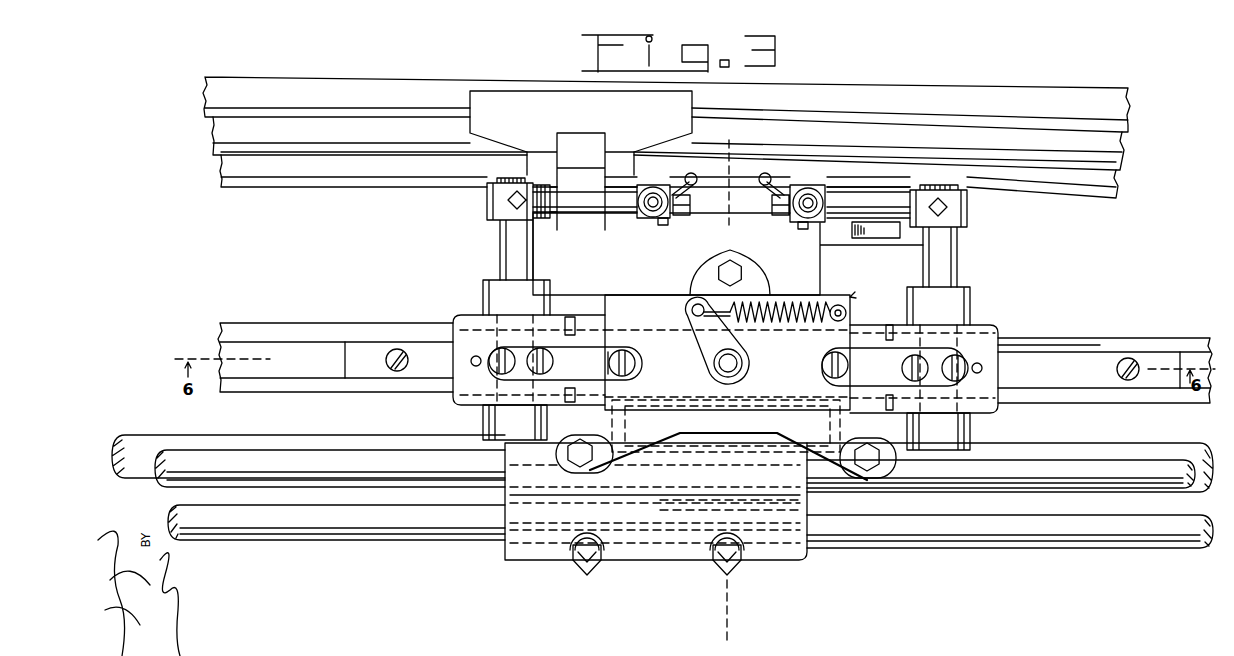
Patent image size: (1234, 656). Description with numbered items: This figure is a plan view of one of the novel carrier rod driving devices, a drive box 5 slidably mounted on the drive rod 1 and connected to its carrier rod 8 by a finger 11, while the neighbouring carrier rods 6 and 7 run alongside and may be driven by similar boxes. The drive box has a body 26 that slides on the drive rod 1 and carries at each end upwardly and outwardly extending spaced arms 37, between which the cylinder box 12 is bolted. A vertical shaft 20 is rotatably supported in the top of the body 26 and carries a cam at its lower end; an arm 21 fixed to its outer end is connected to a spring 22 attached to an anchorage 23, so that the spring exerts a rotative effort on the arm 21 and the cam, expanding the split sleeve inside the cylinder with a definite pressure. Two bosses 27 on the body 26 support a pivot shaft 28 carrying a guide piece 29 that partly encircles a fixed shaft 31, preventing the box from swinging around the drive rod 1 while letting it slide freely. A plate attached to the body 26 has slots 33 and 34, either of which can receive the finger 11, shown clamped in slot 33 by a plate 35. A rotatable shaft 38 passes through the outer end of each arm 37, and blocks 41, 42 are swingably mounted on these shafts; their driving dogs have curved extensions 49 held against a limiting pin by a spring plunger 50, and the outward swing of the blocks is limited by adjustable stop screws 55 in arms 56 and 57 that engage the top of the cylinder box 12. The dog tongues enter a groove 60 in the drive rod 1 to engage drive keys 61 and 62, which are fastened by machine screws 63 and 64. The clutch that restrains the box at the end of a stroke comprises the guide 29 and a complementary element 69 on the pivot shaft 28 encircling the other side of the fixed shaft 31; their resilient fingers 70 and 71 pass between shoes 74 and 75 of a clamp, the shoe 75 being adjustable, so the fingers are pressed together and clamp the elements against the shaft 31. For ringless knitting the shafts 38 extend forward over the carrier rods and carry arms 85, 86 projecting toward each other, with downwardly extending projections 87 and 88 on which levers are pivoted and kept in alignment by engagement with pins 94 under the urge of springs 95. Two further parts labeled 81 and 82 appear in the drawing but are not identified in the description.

The drive rod 1 is at (236, 388).
The drive box 5 is at (722, 150).
The carrier rod 6 is at (237, 164).
The carrier rod 7 is at (225, 133).
The carrier rod 8 is at (205, 97).
The finger 11 is at (574, 150).
The cylinder box 12 is at (655, 302).
The shaft 20 is at (733, 362).
The arm 21 is at (700, 345).
The spring 22 is at (776, 305).
The anchorage 23 is at (836, 305).
The body 26 is at (662, 257).
The bosses 27 is at (755, 412).
The pivot shaft 28 is at (605, 458).
The guide piece 29 is at (760, 393).
The fixed shaft 31 is at (146, 437).
The slot 33 is at (552, 222).
The slot 34 is at (890, 240).
The plate 35 is at (620, 214).
The arms 37 is at (490, 292).
The rotatable shaft 38 is at (500, 246).
The block 41 is at (455, 318).
The block 42 is at (1000, 330).
The curved extensions 49 is at (571, 326).
The spring plunger 50 is at (477, 368).
The adjustable stop screws 55 is at (624, 350).
The arm 56 is at (640, 378).
The arm 57 is at (820, 366).
The groove 60 is at (283, 386).
The drive key 61 is at (430, 385).
The drive key 62 is at (1100, 365).
The machine screw 63 is at (396, 373).
The machine screw 64 is at (1125, 358).
The complementary element 69 is at (805, 465).
The resilient finger 70 is at (778, 505).
The resilient finger 71 is at (792, 527).
The shoe 74 is at (656, 502).
The shoe 75 is at (648, 540).
The bottom rail 81 is at (270, 538).
The front rail 82 is at (200, 452).
The arm 85 is at (585, 210).
The arm 86 is at (873, 206).
The projection 87 is at (672, 216).
The projection 88 is at (790, 216).
The pin 94 is at (664, 226).
The spring 95 is at (770, 180).